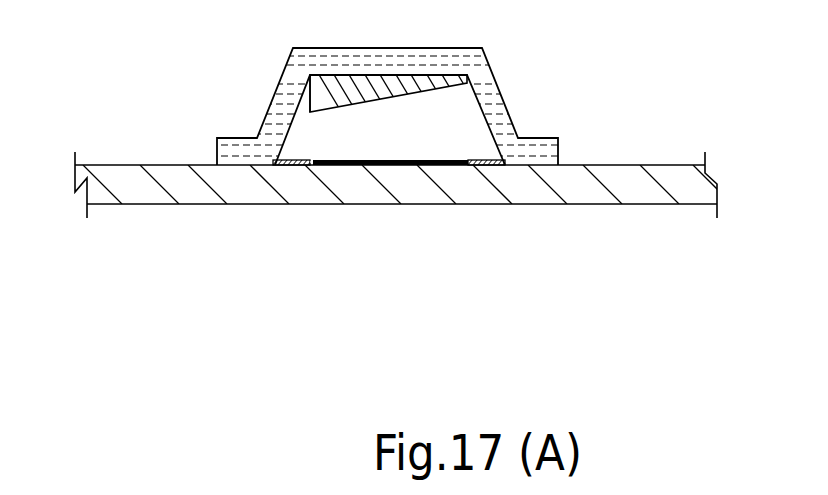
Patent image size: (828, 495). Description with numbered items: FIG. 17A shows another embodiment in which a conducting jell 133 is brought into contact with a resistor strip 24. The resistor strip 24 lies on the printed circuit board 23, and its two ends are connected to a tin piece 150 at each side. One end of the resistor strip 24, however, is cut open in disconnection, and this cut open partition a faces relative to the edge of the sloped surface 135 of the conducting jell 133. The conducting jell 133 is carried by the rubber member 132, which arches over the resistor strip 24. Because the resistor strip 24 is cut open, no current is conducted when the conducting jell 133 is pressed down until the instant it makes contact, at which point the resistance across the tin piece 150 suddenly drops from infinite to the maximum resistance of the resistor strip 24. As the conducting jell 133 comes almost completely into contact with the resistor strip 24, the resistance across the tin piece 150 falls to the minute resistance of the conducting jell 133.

The printed circuit board 23 is at (182, 175).
The resistor strip 24 is at (393, 167).
The rubber member 132 is at (502, 118).
The conducting jell 133 is at (465, 75).
The sloped surface 135 is at (328, 113).
The tin piece 150 is at (287, 167).
The cut open partition a is at (313, 157).